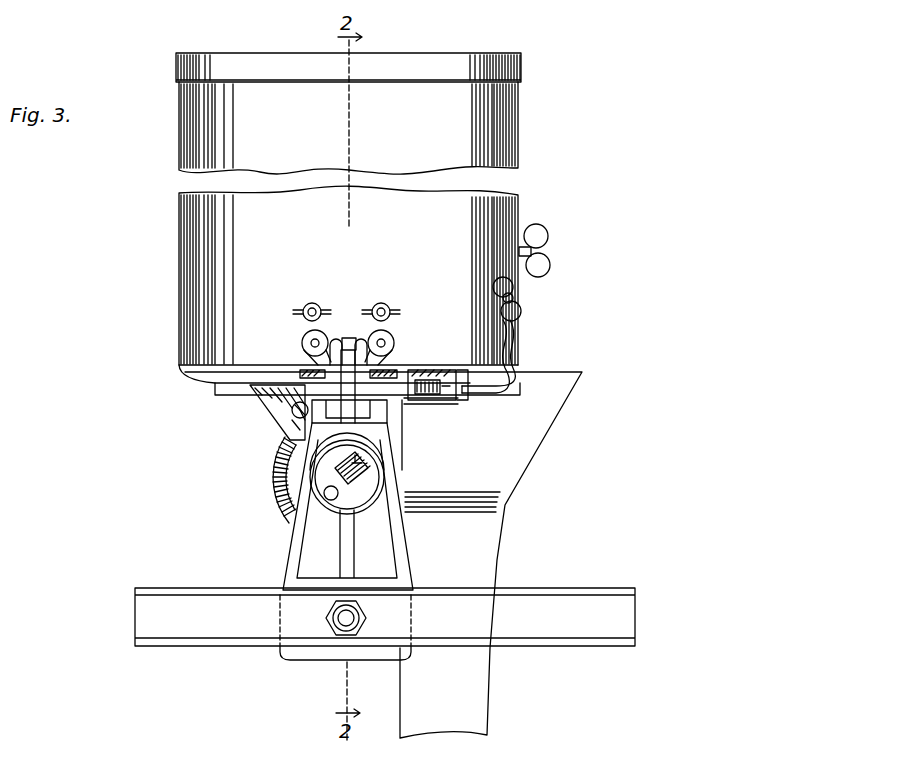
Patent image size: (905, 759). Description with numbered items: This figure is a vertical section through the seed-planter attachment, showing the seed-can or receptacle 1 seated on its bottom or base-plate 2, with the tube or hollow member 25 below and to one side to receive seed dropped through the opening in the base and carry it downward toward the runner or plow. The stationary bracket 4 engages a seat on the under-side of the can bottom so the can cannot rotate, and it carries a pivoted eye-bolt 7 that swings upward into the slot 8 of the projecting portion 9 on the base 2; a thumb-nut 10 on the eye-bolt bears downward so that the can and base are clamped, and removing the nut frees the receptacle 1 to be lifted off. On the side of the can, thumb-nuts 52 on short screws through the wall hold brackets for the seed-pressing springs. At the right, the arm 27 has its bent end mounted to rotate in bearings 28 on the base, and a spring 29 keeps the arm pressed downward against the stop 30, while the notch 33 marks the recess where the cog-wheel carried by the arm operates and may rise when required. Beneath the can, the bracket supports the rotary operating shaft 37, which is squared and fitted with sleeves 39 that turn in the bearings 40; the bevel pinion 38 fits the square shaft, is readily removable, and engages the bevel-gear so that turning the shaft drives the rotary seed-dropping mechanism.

The seed-can or receptacle 1 is at (497, 113).
The bottom or base-plate 2 is at (185, 371).
The stationary bracket 4 is at (300, 389).
The pivoted eye-bolt 7 is at (350, 338).
The slot 8 is at (382, 366).
The projecting portion 9 is at (328, 366).
The thumb-nut 10 is at (376, 339).
The tube or hollow member 25 is at (487, 555).
The arm 27 is at (518, 361).
The bearings 28 is at (452, 401).
The spring 29 is at (440, 370).
The stop 30 is at (514, 385).
The notch 33 is at (498, 358).
The rotary operating shaft 37 is at (330, 475).
The bevel pinion 38 is at (282, 452).
The sleeve 39 is at (372, 483).
The bearing 40 is at (407, 492).
The thumb-nut 52 is at (378, 305).